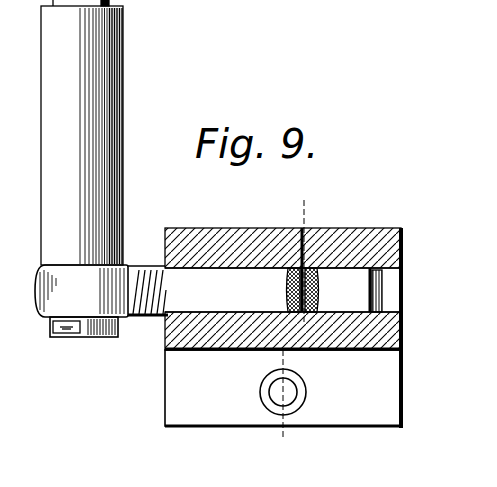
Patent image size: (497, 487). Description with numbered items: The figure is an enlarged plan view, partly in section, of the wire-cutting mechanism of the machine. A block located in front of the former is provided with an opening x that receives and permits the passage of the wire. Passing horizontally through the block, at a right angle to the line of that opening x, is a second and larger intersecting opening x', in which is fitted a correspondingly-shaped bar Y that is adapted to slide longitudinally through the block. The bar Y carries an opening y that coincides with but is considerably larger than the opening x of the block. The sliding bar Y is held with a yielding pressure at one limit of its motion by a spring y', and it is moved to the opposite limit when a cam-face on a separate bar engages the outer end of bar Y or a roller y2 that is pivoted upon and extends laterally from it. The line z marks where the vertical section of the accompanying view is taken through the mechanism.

The roller y2 is at (82, 132).
The spring y' is at (95, 285).
The bar Y is at (283, 290).
The opening y is at (316, 290).
The section line z is at (284, 328).
The opening x is at (296, 319).
The intersecting opening x' is at (401, 290).